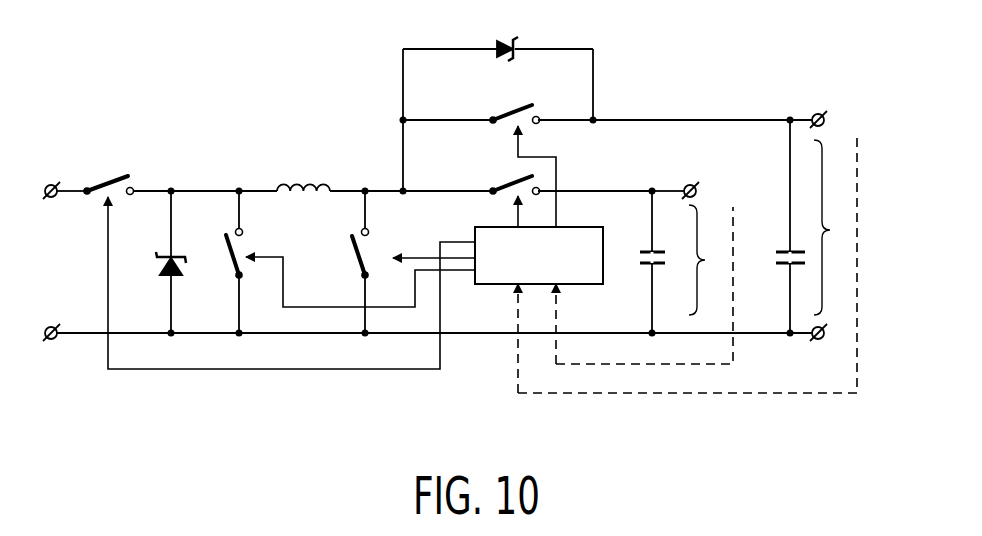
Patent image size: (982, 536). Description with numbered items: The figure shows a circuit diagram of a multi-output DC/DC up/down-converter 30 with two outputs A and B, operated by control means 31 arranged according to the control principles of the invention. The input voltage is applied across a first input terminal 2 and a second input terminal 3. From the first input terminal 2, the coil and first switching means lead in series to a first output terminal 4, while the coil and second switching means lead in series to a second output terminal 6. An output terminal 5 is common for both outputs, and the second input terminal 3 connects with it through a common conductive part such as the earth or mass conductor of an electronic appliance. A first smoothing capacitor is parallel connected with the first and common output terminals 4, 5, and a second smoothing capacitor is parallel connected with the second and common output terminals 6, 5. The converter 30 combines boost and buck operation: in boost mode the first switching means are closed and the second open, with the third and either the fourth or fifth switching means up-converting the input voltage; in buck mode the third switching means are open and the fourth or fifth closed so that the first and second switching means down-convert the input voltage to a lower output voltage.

The first input terminal 2 is at (51, 179).
The second input terminal 3 is at (53, 345).
The first output terminal 4 is at (817, 111).
The common output terminal 5 is at (820, 343).
The second output terminal 6 is at (689, 181).
The multi-output DC/DC up/down-converter 30 is at (282, 120).
The control means 31 is at (489, 286).